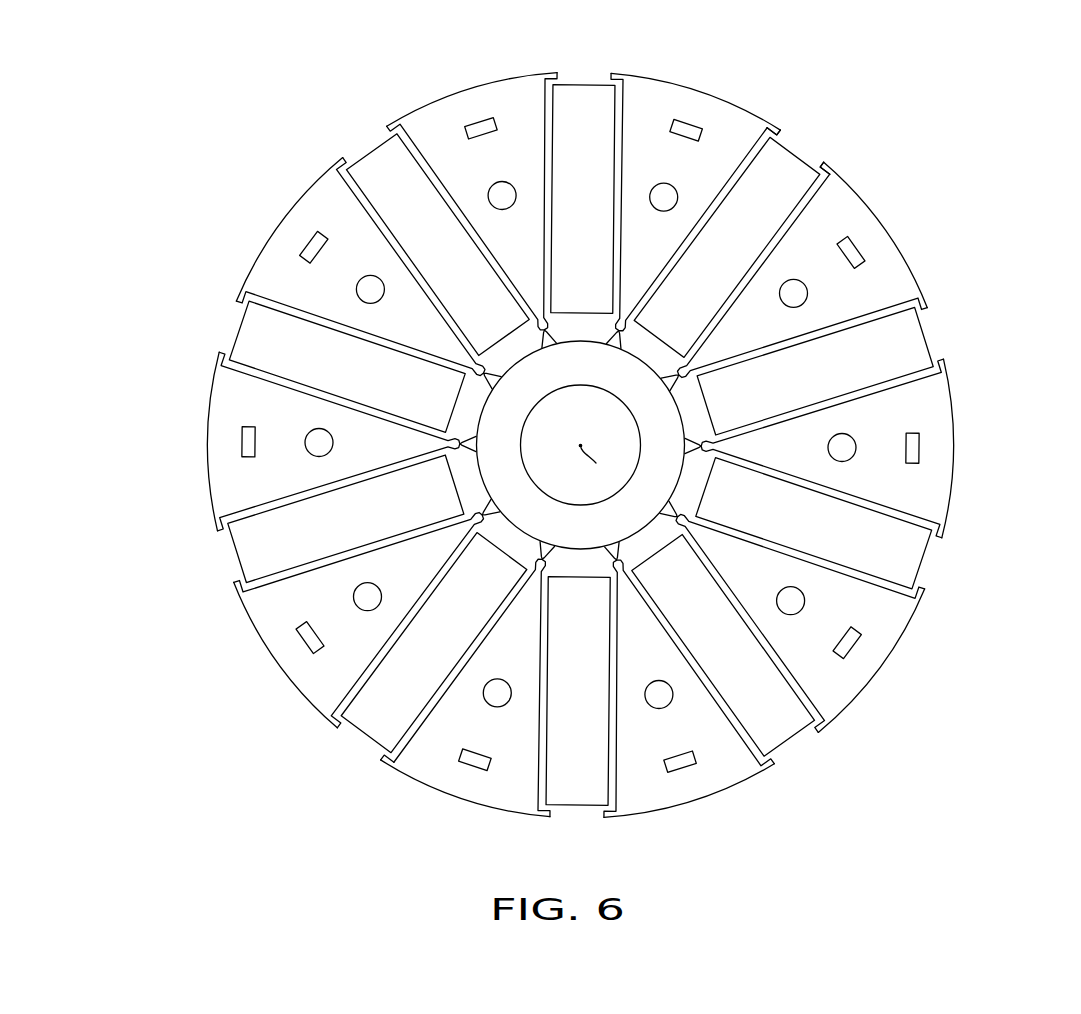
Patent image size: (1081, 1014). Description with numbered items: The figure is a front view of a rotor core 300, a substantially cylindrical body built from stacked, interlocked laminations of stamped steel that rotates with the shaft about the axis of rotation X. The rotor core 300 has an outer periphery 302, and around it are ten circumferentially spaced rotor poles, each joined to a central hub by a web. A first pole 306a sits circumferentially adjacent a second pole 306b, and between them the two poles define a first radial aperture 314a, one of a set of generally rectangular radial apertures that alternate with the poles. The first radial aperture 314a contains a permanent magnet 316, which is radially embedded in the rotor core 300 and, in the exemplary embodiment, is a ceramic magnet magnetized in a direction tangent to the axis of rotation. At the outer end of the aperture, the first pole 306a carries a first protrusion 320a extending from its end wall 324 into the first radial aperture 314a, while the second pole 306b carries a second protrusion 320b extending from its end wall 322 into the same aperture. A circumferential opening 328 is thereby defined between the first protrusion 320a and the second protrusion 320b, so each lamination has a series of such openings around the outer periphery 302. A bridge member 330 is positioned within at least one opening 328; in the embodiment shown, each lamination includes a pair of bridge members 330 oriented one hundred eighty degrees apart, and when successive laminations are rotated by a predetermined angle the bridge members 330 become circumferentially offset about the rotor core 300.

The rotor core 300 is at (200, 122).
The outer periphery 302 is at (298, 197).
The first pole 306a is at (637, 112).
The second pole 306b is at (853, 288).
The first radial aperture 314a is at (806, 240).
The permanent magnet 316 is at (892, 358).
The first protrusion 320a is at (767, 130).
The second protrusion 320b is at (830, 173).
The end wall 322 is at (917, 312).
The end wall 324 is at (745, 147).
The circumferential opening 328 is at (814, 124).
The bridge member 330 is at (813, 152).